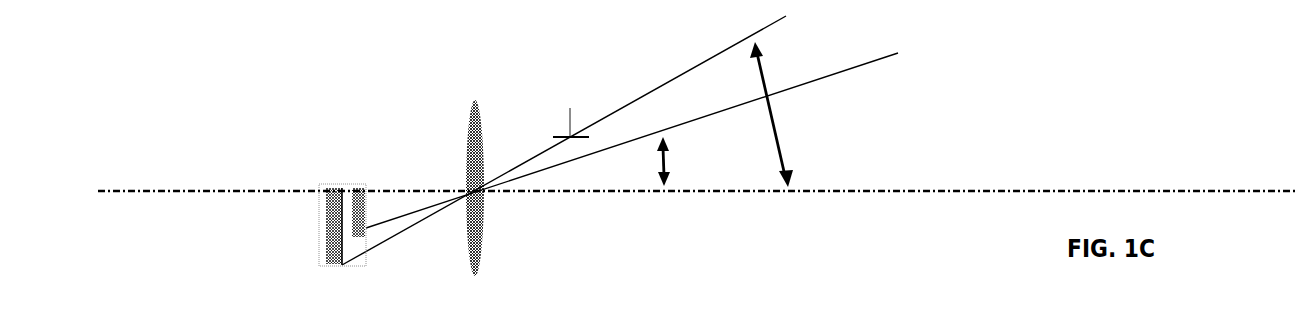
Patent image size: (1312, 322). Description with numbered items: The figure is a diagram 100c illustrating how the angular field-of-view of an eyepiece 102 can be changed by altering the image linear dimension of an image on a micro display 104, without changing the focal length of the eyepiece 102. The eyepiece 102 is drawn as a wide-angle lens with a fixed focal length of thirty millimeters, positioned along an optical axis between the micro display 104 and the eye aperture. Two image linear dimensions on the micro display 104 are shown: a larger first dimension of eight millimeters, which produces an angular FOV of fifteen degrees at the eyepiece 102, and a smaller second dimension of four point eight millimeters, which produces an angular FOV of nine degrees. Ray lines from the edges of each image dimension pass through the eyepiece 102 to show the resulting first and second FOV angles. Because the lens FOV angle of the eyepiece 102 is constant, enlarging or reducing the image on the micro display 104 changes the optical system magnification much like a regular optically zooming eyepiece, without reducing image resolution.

The diagram 100c is at (1216, 226).
The eyepiece 102 is at (580, 80).
The micro display 104 is at (331, 183).